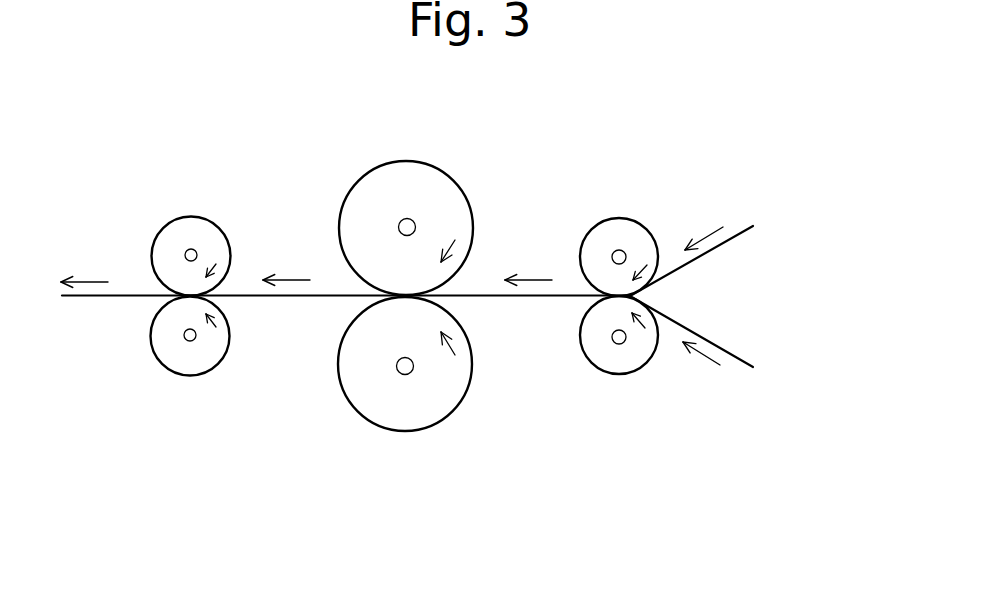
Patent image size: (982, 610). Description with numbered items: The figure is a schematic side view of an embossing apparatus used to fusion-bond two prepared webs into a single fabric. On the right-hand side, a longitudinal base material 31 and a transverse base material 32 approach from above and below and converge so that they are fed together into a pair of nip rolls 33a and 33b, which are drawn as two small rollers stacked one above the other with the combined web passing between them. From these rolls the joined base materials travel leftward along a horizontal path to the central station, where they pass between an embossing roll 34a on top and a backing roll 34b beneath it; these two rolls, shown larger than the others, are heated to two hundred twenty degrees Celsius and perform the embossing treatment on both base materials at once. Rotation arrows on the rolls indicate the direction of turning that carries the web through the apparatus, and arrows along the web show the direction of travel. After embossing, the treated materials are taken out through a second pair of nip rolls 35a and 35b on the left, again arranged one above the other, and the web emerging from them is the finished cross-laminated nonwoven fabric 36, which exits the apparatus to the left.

The longitudinal base material 31 is at (735, 238).
The transverse base material 32 is at (735, 353).
The nip roll 33a is at (627, 237).
The nip roll 33b is at (635, 360).
The embossing roll 34a is at (420, 186).
The backing roll 34b is at (425, 407).
The nip roll 35a is at (199, 228).
The nip roll 35b is at (193, 367).
The cross-laminated nonwoven fabric 36 is at (75, 296).